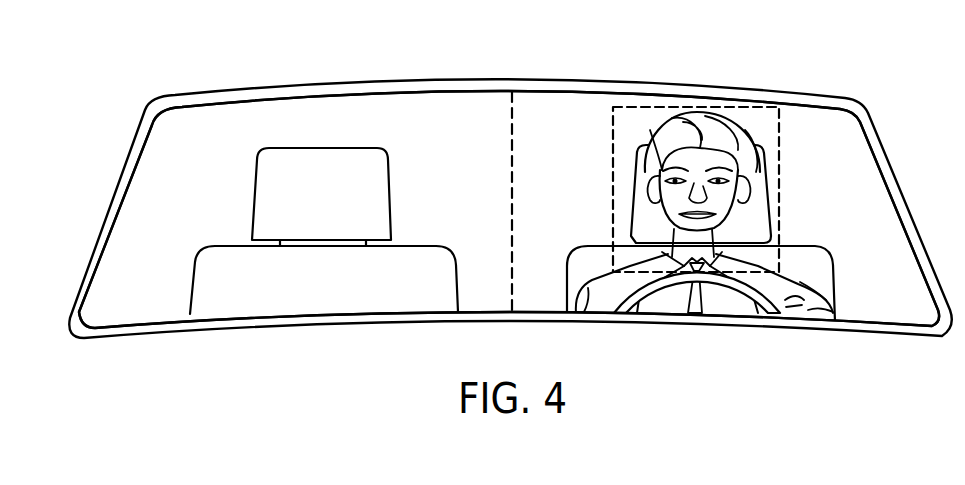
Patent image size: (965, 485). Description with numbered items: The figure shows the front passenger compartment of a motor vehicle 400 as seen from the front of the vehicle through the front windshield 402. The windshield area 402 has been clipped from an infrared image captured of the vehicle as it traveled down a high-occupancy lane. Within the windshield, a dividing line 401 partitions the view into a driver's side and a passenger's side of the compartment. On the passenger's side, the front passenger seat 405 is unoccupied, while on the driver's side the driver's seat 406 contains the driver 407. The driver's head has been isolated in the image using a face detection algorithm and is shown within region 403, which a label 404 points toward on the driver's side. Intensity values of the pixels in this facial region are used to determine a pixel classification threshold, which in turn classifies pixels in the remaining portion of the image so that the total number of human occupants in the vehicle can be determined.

The motor vehicle 400 is at (110, 206).
The dividing line 401 is at (517, 210).
The front windshield 402 is at (207, 118).
The region 403 is at (788, 167).
The driver image region 404 is at (571, 112).
The front passenger seat 405 is at (392, 198).
The driver's seat 406 is at (813, 245).
The driver 407 is at (833, 298).